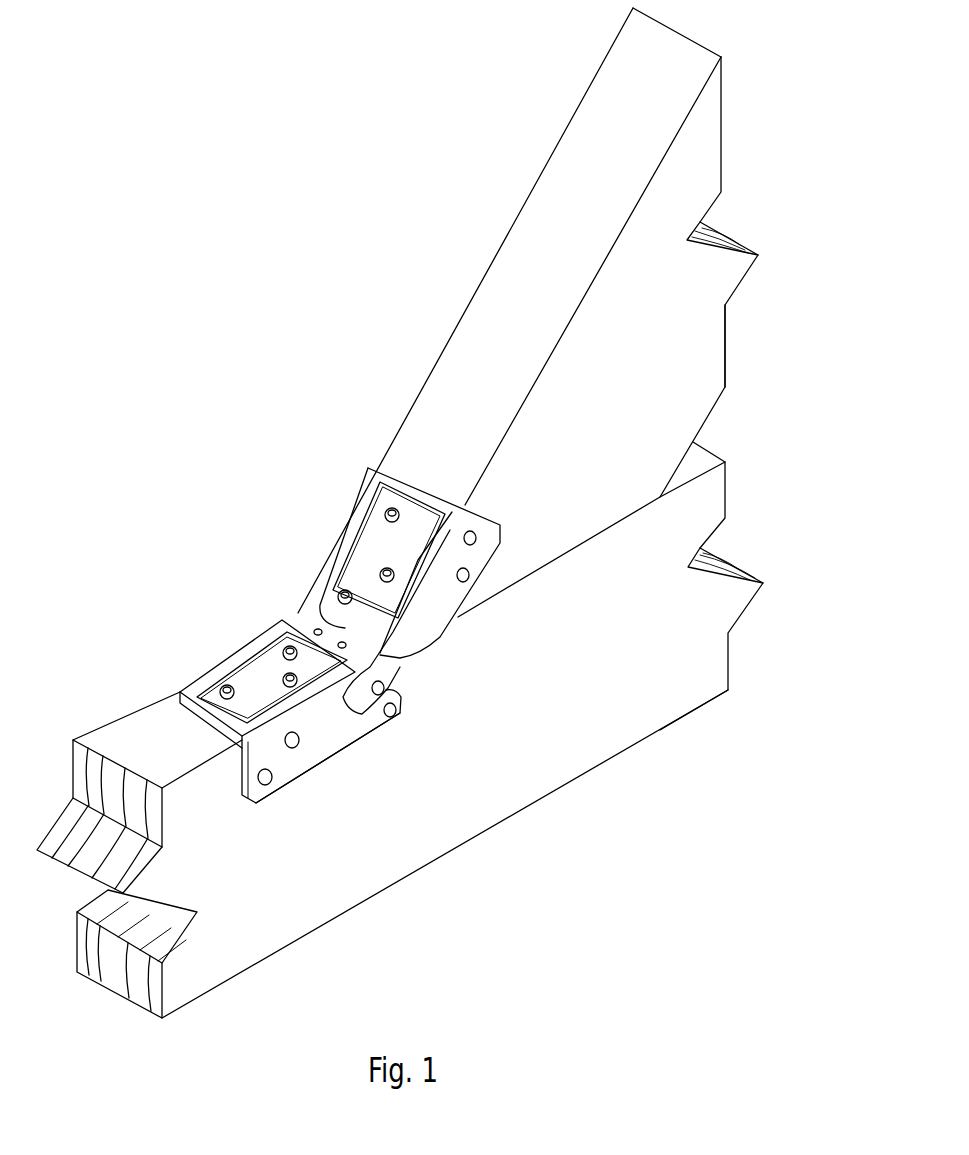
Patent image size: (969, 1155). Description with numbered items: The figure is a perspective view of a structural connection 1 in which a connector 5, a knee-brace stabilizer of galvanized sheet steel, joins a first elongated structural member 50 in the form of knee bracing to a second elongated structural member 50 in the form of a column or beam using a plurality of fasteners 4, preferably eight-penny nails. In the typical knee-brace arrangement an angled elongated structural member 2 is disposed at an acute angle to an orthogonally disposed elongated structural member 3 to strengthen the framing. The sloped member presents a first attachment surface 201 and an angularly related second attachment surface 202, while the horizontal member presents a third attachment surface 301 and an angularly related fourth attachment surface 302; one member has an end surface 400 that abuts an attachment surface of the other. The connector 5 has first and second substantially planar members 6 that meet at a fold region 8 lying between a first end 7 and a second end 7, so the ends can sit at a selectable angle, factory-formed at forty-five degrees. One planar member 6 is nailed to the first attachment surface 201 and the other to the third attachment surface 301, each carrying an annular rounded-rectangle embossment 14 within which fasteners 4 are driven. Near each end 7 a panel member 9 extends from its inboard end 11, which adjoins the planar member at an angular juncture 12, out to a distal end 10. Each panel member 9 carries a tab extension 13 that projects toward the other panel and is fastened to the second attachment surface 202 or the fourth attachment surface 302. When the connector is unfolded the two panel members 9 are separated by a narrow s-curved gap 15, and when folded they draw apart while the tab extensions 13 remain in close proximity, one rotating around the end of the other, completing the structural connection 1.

The structural connection 1 is at (376, 646).
The elongated structural member 2 is at (542, 310).
The orthogonally disposed elongated structural member 3 is at (407, 736).
The fastener 4 is at (342, 645).
The connector 5 is at (197, 680).
The substantially planar member 6 is at (400, 470).
The end 7 is at (423, 487).
The fold region 8 is at (313, 632).
The panel member 9 is at (362, 747).
The distal end 10 is at (268, 783).
The inboard end 11 is at (252, 777).
The angular juncture 12 is at (447, 490).
The tab extension 13 is at (373, 733).
The embossment 14 is at (292, 653).
The s-curved gap 15 is at (300, 617).
The elongated structural member 50 is at (727, 355).
The first attachment surface 201 is at (548, 190).
The second attachment surface 202 is at (697, 173).
The third attachment surface 301 is at (112, 753).
The fourth attachment surface 302 is at (229, 959).
The end surface 400 is at (643, 508).